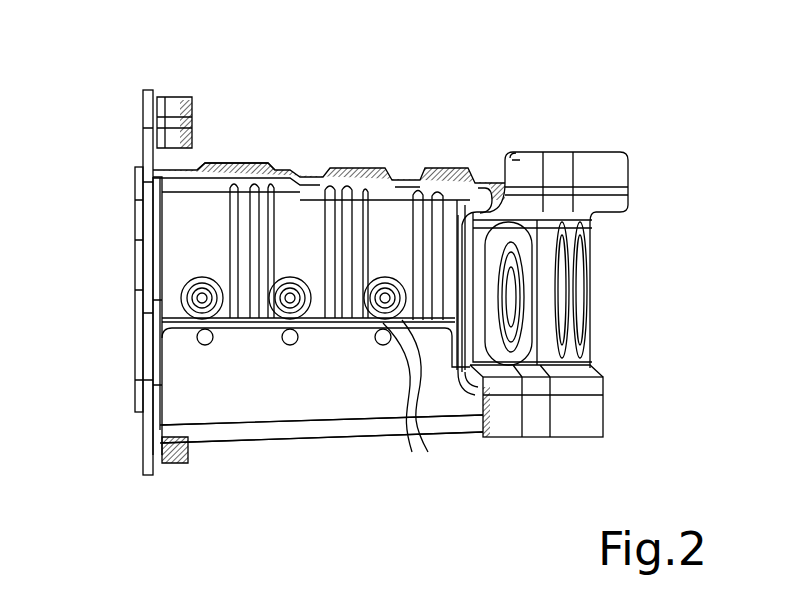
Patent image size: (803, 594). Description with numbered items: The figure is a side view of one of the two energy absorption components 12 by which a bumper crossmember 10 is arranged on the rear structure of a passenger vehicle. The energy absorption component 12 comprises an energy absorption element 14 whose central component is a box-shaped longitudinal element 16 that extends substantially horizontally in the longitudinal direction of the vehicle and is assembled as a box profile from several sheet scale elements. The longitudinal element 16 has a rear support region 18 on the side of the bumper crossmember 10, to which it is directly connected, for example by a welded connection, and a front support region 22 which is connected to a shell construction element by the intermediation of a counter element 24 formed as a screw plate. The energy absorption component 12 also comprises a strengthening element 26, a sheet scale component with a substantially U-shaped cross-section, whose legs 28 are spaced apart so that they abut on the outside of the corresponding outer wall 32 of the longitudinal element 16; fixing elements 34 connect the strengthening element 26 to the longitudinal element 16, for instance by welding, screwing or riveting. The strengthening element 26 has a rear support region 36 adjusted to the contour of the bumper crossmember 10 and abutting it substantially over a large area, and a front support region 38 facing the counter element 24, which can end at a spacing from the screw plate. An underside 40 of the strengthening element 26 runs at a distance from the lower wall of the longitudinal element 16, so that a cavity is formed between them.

The bumper crossmember 10 is at (640, 276).
The energy absorption component 12 is at (367, 78).
The energy absorption element 14 is at (294, 233).
The longitudinal element 16 is at (377, 196).
The rear support region 18 is at (484, 135).
The front support region 22 is at (172, 243).
The counter element 24 is at (148, 290).
The strengthening element 26 is at (305, 410).
The legs 28 is at (242, 395).
The outer wall 32 is at (403, 268).
The fixing elements 34 is at (412, 452).
The rear support region 36 is at (481, 428).
The front support region 38 is at (165, 435).
The underside 40 is at (215, 443).